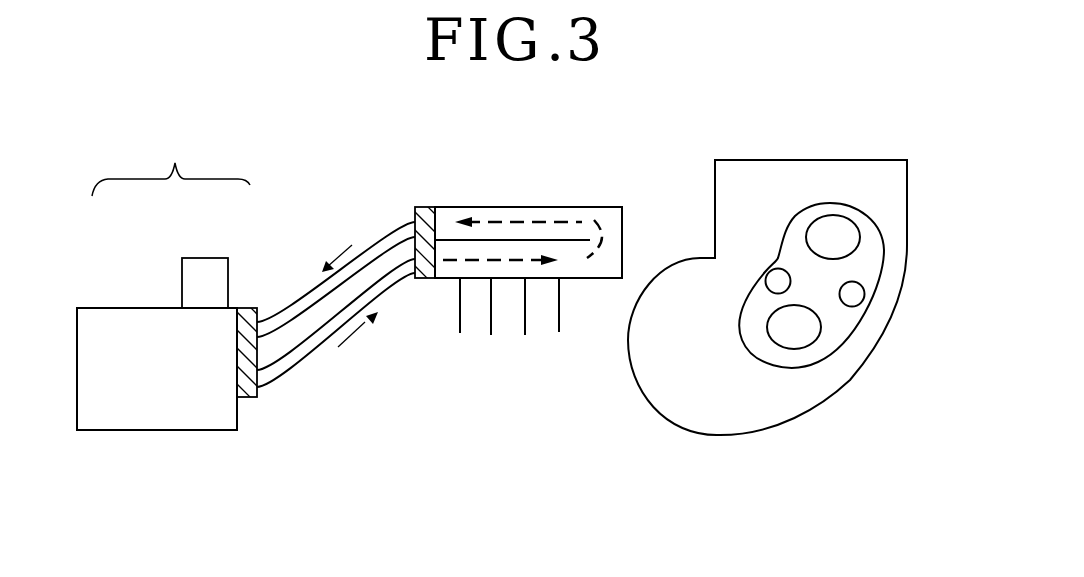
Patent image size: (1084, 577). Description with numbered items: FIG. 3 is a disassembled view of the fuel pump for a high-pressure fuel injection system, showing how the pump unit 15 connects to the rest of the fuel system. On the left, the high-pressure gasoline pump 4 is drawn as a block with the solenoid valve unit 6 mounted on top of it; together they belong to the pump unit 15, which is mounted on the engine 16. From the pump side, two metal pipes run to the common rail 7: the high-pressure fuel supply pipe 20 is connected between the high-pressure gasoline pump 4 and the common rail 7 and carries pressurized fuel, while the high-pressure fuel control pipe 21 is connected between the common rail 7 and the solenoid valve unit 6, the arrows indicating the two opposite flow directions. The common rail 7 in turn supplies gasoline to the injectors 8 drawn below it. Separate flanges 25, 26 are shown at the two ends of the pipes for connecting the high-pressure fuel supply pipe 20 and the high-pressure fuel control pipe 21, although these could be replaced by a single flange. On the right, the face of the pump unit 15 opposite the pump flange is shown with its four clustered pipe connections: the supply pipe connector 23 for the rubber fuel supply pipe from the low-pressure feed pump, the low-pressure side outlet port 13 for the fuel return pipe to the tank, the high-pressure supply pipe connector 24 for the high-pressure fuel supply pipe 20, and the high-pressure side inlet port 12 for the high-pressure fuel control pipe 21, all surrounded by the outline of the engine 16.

The high-pressure gasoline pump 4 is at (128, 322).
The solenoid valve unit 6 is at (205, 268).
The common rail 7 is at (522, 207).
The injectors 8 is at (460, 326).
The high-pressure side inlet port 12 is at (840, 238).
The low-pressure side outlet port 13 is at (780, 280).
The pump unit 15 is at (833, 432).
The engine 16 is at (772, 427).
The high-pressure fuel supply pipe 20 is at (323, 347).
The high-pressure fuel control pipe 21 is at (290, 318).
The supply pipe connector 23 is at (855, 297).
The high-pressure supply pipe connector 24 is at (783, 330).
The flange 25 is at (250, 398).
The flange 26 is at (427, 280).